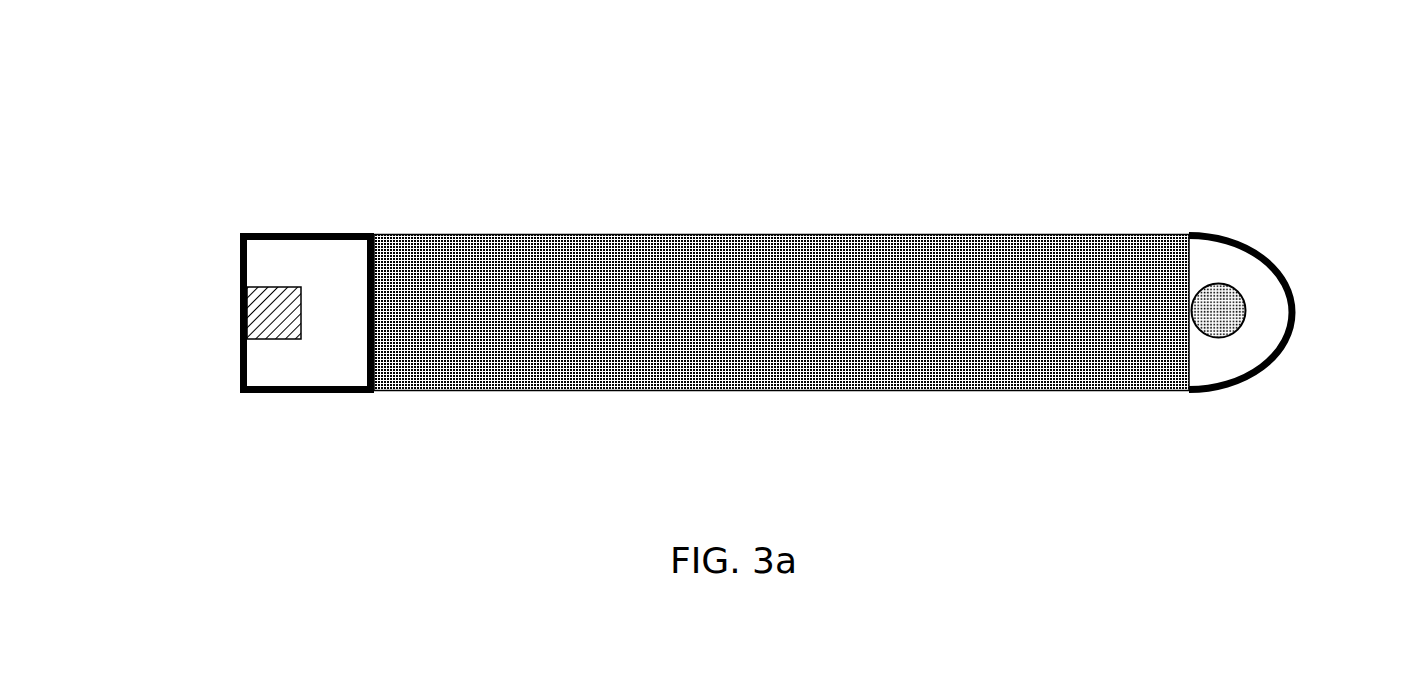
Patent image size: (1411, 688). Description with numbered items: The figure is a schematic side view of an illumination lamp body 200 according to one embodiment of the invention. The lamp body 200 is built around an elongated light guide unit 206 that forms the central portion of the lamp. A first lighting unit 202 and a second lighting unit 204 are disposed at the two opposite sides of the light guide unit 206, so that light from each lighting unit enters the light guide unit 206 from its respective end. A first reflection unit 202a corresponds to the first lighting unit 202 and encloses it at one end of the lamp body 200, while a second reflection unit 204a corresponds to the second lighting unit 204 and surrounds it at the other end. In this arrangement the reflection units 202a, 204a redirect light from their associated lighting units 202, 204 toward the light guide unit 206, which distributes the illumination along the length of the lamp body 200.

The lamp body 200 is at (747, 160).
The first lighting unit 202 is at (1222, 303).
The first reflection unit 202a is at (1284, 353).
The second lighting unit 204 is at (247, 309).
The second reflection unit 204a is at (306, 391).
The light guide unit 206 is at (760, 362).